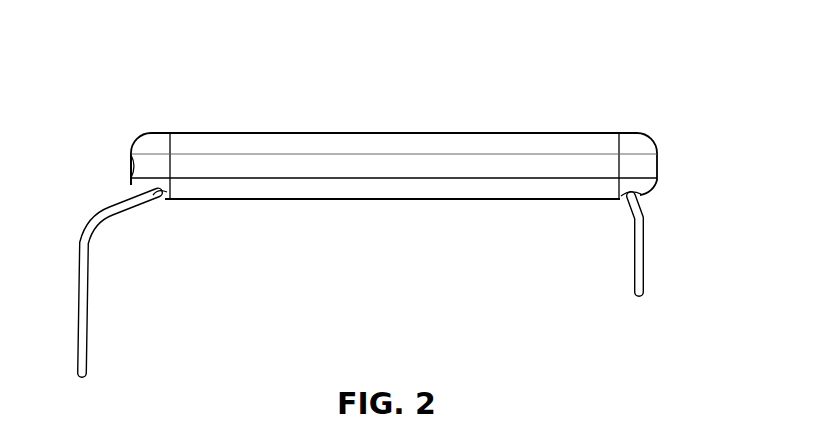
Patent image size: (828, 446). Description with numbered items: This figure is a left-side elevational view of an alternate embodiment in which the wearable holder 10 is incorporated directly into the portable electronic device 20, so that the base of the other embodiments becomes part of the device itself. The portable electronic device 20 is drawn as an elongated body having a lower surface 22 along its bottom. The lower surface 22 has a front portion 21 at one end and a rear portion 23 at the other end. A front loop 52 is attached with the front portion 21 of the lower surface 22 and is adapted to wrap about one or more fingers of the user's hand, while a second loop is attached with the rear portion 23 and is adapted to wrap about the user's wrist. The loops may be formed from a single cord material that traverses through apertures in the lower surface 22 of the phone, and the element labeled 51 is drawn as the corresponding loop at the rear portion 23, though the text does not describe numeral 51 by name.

The wearable holder 10 is at (505, 85).
The portable electronic device 20 is at (300, 167).
The front portion 21 is at (641, 194).
The lower surface 22 is at (313, 193).
The rear portion 23 is at (163, 192).
The first lead wire 51 is at (646, 283).
The front loop 52 is at (88, 315).